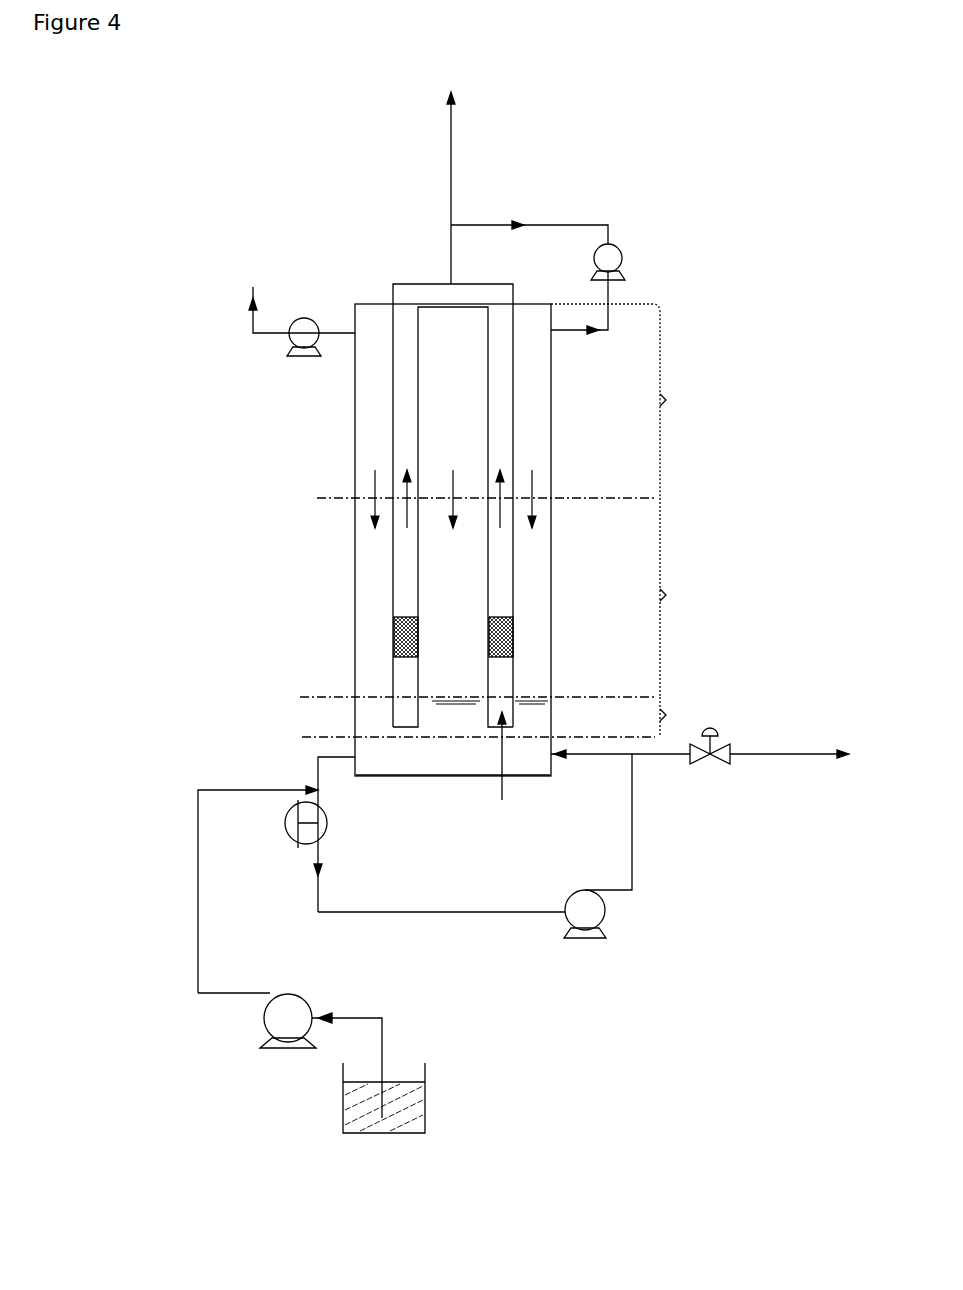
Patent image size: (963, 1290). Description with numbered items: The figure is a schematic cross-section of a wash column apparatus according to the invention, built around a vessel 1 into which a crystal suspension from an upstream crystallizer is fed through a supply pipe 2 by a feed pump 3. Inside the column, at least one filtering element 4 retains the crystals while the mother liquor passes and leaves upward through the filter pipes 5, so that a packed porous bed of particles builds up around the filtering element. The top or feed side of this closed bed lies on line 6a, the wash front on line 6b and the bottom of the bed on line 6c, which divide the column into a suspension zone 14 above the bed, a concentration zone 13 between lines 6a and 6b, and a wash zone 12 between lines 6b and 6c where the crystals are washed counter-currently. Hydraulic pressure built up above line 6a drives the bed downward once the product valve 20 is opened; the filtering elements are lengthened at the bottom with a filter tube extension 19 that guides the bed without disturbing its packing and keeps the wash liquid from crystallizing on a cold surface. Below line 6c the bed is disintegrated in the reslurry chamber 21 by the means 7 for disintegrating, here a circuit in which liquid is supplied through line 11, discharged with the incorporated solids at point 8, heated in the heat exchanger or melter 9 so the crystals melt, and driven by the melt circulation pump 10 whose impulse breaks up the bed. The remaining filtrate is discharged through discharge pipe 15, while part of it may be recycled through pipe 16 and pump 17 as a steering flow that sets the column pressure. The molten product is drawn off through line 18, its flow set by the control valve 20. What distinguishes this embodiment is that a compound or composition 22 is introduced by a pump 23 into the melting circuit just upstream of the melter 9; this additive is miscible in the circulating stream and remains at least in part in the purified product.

The vessel 1 is at (355, 458).
The supply pipe 2 is at (271, 340).
The pump 3 is at (303, 318).
The filtering element 4 is at (513, 631).
The means for discharging liquid 5 is at (513, 387).
The top side of the porous bed 6a is at (600, 498).
The wash front 6b is at (373, 697).
The bottom side of the packed, porous bed 6c is at (312, 737).
The means for disintegrating the packed bed 7 is at (650, 920).
The discharge point 8 is at (316, 777).
The heat exchanger 9 is at (287, 830).
The melt circulation pump 10 is at (575, 892).
The line 11 is at (605, 754).
The wash zone 12 is at (676, 717).
The concentration zone 13 is at (676, 597).
The suspension zone 14 is at (622, 401).
The discharge pipe 15 is at (451, 138).
The pipe 16 is at (567, 225).
The pump 17 is at (622, 258).
The line 18 is at (786, 754).
The filter tube extension 19 is at (502, 768).
The product valve 20 is at (720, 732).
The reslurry chamber 21 is at (430, 765).
The compound or composition 22 is at (415, 1098).
The pump 23 is at (306, 1000).